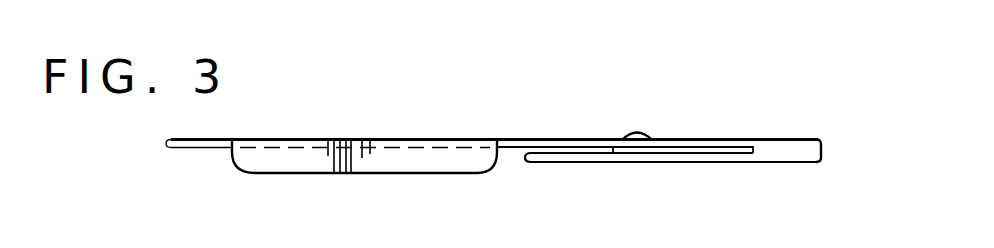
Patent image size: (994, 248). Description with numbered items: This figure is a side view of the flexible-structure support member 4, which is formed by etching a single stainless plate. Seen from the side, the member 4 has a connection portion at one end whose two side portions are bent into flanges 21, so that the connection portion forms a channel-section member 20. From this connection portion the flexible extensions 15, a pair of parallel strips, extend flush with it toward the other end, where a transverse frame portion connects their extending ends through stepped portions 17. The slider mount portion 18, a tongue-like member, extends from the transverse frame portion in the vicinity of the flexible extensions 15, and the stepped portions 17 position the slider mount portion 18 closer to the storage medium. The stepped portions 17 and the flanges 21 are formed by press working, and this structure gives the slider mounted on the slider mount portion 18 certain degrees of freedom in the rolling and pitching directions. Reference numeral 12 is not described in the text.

The flexible-structure support member 4 is at (512, 130).
The adhesive dot 12 is at (640, 132).
The flexible extensions 15 is at (720, 139).
The stepped portions 17 is at (804, 163).
The slider mount portion 18 is at (647, 163).
The channel-section member 20 is at (374, 182).
The flanges 21 is at (265, 162).